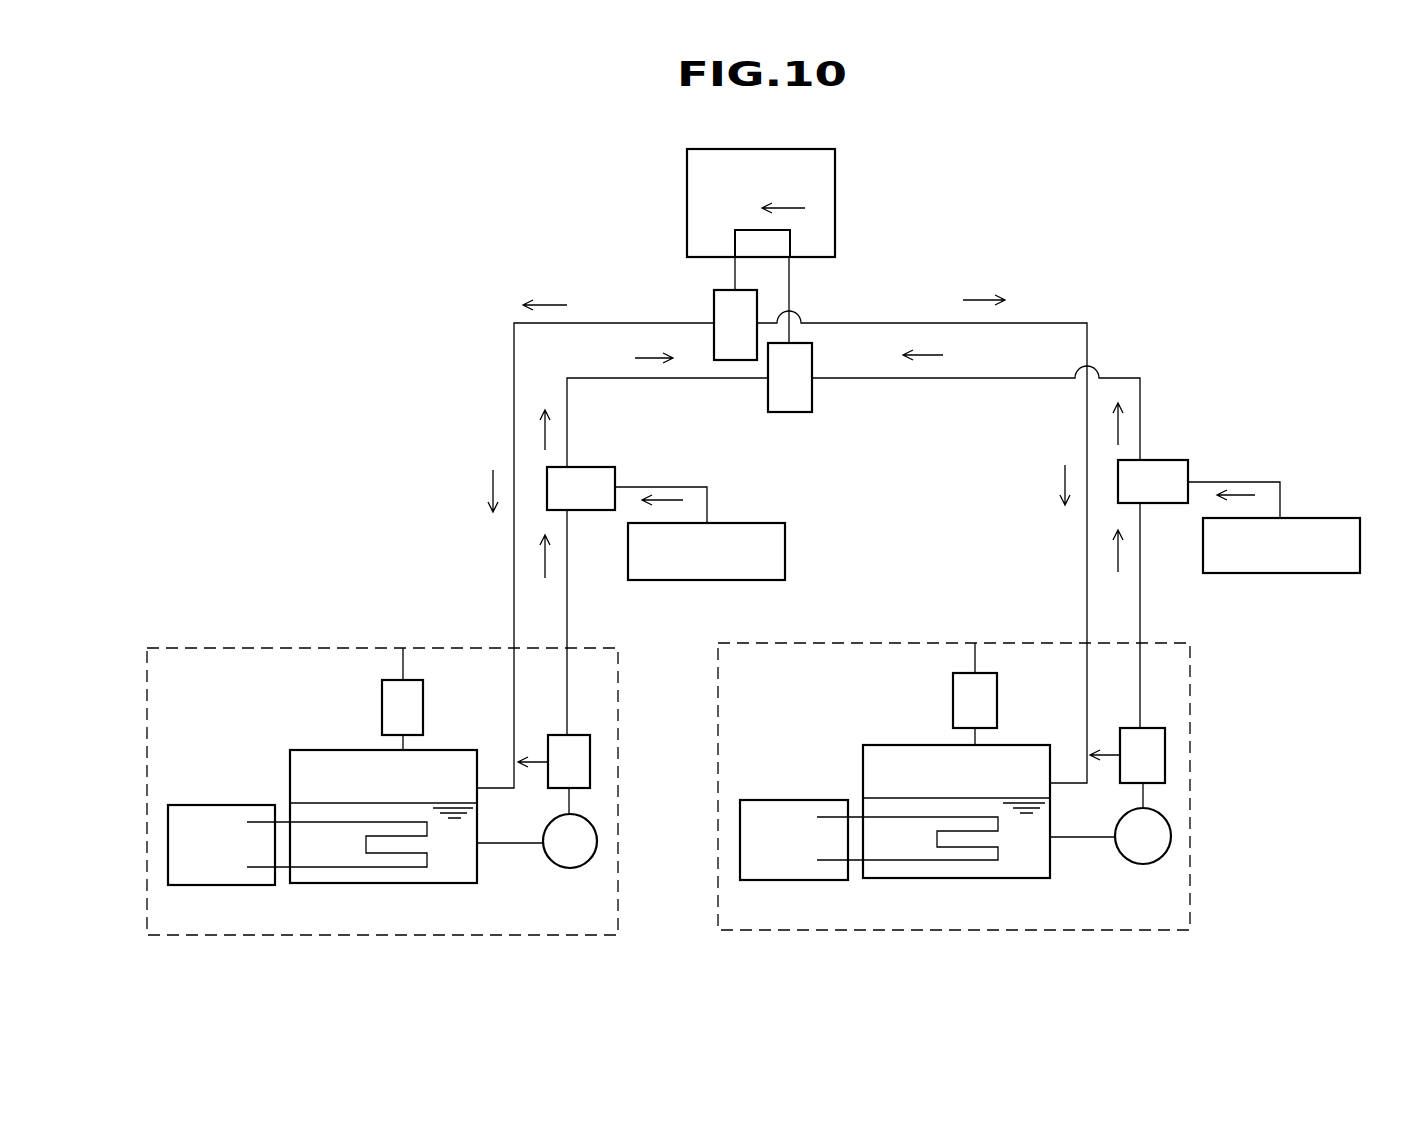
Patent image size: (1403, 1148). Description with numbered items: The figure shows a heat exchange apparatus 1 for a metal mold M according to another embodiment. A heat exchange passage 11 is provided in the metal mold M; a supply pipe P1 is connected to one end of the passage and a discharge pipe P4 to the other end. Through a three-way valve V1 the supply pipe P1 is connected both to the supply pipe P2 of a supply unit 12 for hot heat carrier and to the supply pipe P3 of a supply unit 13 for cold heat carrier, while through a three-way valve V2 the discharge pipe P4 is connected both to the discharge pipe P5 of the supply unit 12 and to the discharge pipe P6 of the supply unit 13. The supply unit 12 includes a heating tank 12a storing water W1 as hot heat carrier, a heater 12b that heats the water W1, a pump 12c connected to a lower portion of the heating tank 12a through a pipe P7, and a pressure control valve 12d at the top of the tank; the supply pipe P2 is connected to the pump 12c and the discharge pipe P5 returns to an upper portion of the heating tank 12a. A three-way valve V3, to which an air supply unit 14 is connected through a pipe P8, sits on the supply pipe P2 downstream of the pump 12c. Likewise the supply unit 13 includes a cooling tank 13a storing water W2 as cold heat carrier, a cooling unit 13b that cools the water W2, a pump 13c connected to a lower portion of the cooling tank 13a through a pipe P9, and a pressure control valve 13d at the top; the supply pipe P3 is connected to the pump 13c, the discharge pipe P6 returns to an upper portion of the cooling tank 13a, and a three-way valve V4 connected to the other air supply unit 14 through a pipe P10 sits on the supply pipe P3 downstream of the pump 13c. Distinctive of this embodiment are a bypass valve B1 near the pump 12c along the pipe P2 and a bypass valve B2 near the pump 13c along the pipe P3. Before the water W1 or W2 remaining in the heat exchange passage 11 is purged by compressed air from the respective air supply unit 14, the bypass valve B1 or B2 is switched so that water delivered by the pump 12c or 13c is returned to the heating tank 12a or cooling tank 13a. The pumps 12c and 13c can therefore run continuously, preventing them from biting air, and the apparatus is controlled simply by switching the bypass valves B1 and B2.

The heat exchange apparatus 1 is at (427, 268).
The metal mold M is at (823, 193).
The heat exchange passage 11 is at (735, 240).
The supply pipe P1 is at (790, 282).
The supply pipe P2 is at (967, 378).
The supply pipe P3 is at (638, 378).
The discharge pipe P4 is at (735, 273).
The discharge pipe P5 is at (888, 323).
The discharge pipe P6 is at (607, 323).
The pipe P7 is at (1082, 837).
The pipe P8 is at (1280, 500).
The pipe P9 is at (508, 843).
The pipe P10 is at (708, 503).
The three-way valve V1 is at (812, 393).
The three-way valve V2 is at (714, 307).
The three-way valve V3 is at (1170, 460).
The three-way valve V4 is at (598, 467).
The supply unit for hot heat carrier 12 is at (1190, 698).
The heating tank 12a is at (883, 745).
The heater 12b is at (760, 800).
The pump 12c is at (1137, 850).
The pressure control valve 12d is at (997, 692).
The supply unit for cold heat carrier 13 is at (185, 648).
The cooling tank 13a is at (310, 750).
The cooling unit 13b is at (190, 805).
The pump 13c is at (565, 857).
The pressure control valve 13d is at (423, 697).
The air supply unit 14 is at (757, 523).
The bypass valve B1 is at (1165, 755).
The bypass valve B2 is at (590, 758).
The water W1 is at (1043, 810).
The water W2 is at (470, 817).